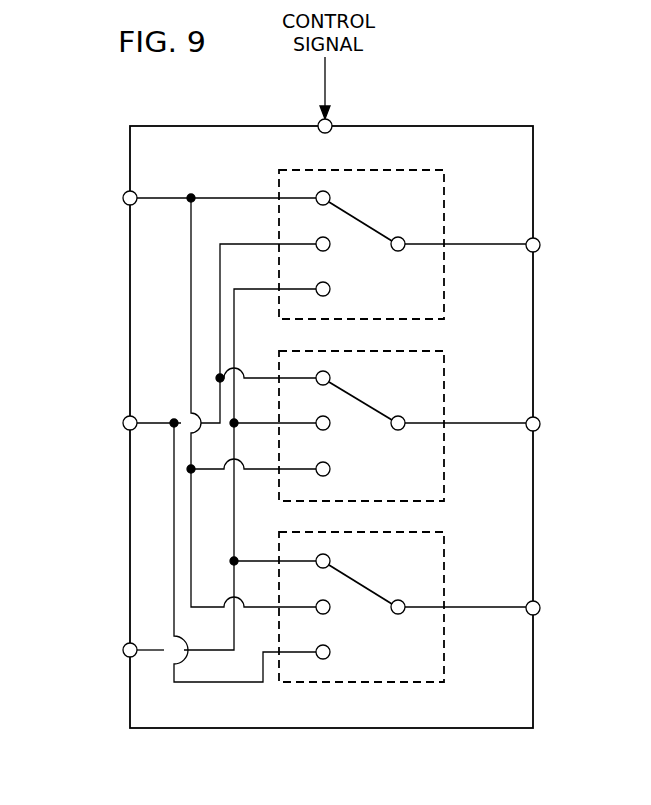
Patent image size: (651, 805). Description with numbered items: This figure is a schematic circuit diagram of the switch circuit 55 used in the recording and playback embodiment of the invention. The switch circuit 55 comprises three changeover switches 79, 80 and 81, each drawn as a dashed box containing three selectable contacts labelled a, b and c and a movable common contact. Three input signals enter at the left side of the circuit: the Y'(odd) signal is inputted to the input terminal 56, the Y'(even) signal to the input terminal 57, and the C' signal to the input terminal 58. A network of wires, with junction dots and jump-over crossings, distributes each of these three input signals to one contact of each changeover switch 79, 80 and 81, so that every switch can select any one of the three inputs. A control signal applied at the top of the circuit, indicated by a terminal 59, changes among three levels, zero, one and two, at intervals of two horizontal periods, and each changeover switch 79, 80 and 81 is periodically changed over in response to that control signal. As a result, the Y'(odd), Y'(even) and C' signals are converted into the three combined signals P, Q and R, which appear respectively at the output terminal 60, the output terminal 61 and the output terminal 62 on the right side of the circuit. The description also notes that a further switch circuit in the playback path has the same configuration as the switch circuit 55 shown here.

The switch circuit 55 is at (320, 729).
The input terminal 56 is at (125, 192).
The input terminal 57 is at (124, 416).
The input terminal 58 is at (124, 643).
The control signal terminal 59 is at (332, 121).
The output terminal 60 is at (539, 240).
The output terminal 61 is at (539, 419).
The output terminal 62 is at (539, 603).
The changeover switch 79 is at (385, 170).
The changeover switch 80 is at (444, 383).
The changeover switch 81 is at (444, 570).